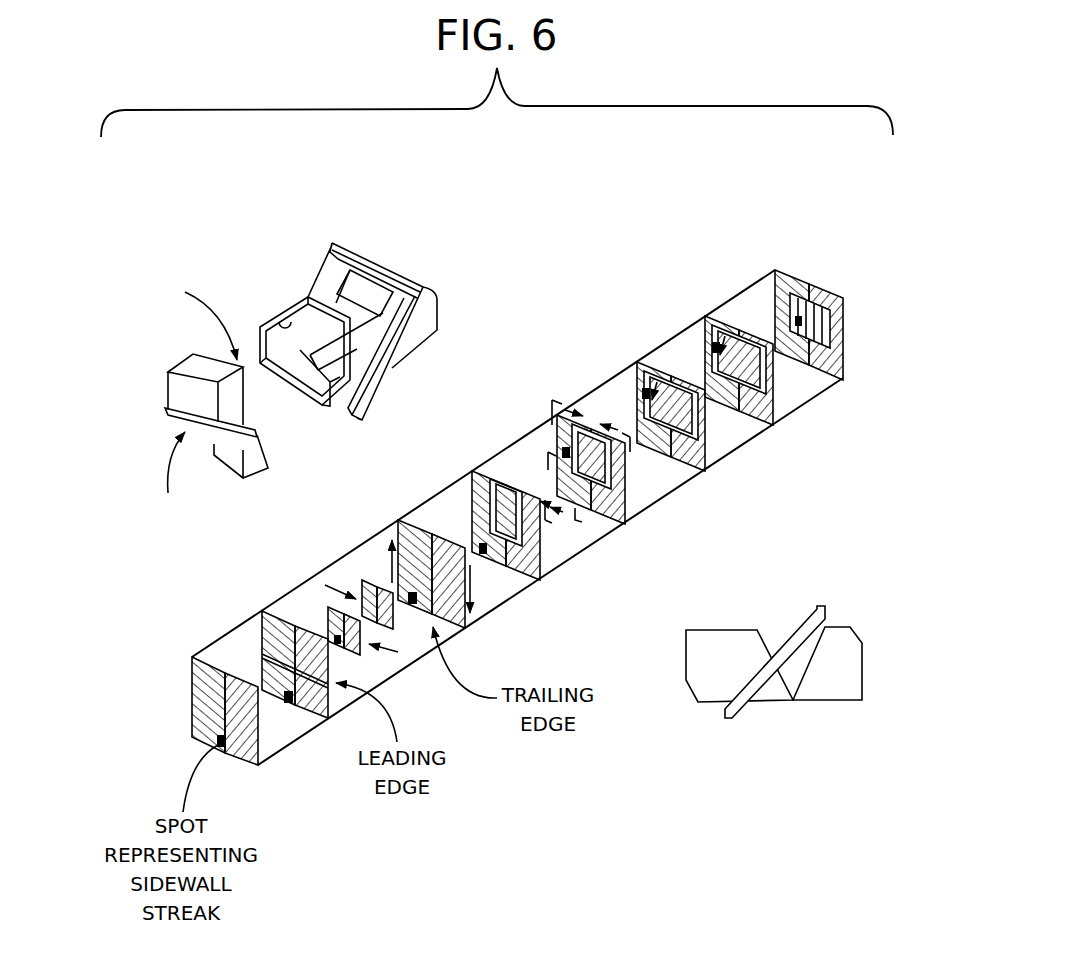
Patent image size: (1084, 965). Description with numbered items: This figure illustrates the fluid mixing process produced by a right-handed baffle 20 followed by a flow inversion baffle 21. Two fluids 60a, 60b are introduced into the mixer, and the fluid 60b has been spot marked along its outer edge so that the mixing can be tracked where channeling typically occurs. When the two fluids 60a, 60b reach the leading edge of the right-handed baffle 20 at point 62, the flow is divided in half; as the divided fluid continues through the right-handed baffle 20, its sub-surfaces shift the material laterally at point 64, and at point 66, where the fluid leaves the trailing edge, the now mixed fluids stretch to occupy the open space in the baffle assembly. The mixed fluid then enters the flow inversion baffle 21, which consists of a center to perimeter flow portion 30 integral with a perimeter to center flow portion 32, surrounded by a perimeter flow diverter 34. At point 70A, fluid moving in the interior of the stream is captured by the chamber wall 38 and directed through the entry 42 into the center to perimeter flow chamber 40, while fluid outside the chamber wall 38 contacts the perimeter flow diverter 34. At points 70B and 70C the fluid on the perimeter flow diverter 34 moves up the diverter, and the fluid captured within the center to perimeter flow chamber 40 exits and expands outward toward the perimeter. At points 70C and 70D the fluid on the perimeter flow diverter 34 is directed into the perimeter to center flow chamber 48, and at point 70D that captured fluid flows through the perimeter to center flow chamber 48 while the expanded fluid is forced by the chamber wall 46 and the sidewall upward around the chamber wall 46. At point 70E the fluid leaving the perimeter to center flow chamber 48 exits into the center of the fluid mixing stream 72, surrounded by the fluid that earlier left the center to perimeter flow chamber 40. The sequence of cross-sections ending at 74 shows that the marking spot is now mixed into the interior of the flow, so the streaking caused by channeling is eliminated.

The right-handed baffle 20 is at (158, 408).
The flow inversion baffle 21 is at (367, 323).
The center to perimeter flow portion 30 is at (284, 327).
The perimeter to center flow portion 32 is at (357, 236).
The perimeter flow diverter 34 is at (358, 383).
The chamber wall 38 is at (333, 380).
The center to perimeter flow chamber 40 is at (298, 345).
The entry 42 is at (283, 320).
The chamber wall 46 is at (422, 337).
The perimeter to center flow chamber 48 is at (390, 312).
The fluid 60a is at (252, 746).
The fluid 60b is at (206, 698).
The point 62 is at (327, 722).
The point 64 is at (400, 690).
The point 66 is at (480, 637).
The point 70A is at (545, 584).
The point 70B is at (630, 528).
The point 70C is at (708, 476).
The point 70D is at (777, 433).
The point 70E is at (837, 509).
The fluid mixing stream 72 is at (826, 323).
The grating bars 74 is at (824, 300).